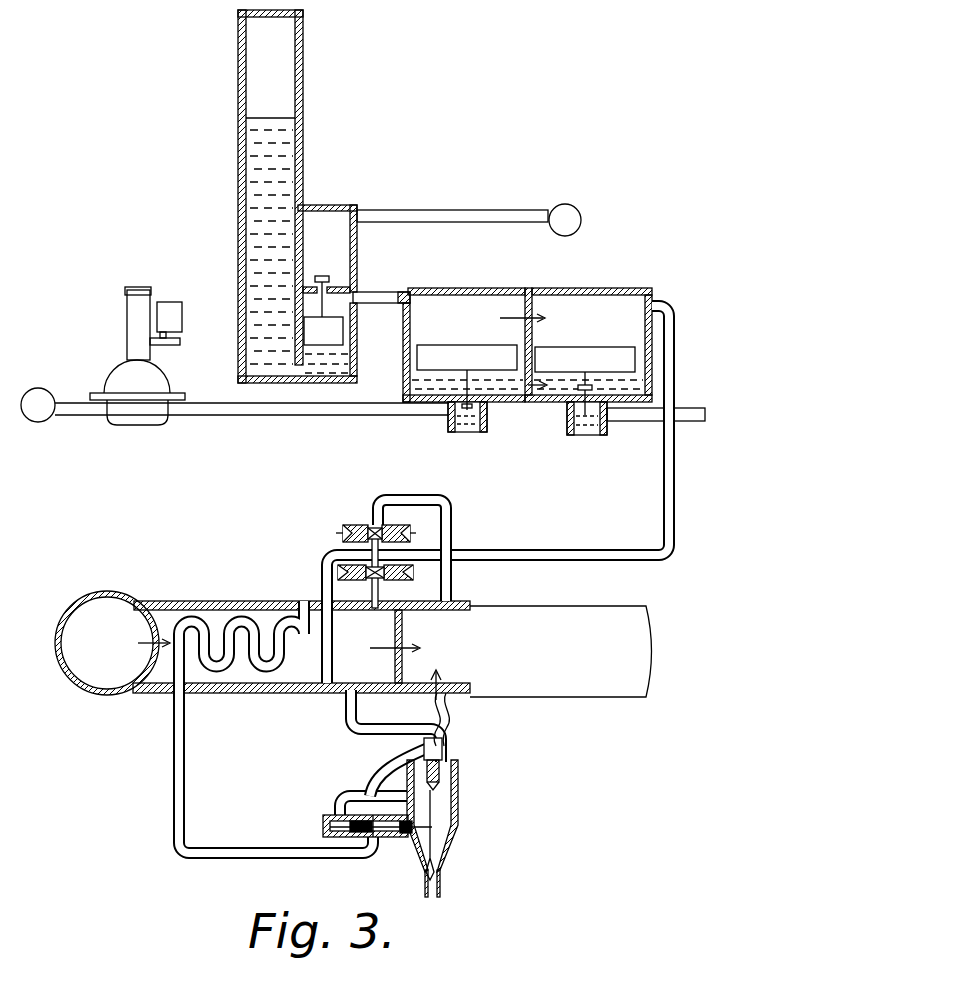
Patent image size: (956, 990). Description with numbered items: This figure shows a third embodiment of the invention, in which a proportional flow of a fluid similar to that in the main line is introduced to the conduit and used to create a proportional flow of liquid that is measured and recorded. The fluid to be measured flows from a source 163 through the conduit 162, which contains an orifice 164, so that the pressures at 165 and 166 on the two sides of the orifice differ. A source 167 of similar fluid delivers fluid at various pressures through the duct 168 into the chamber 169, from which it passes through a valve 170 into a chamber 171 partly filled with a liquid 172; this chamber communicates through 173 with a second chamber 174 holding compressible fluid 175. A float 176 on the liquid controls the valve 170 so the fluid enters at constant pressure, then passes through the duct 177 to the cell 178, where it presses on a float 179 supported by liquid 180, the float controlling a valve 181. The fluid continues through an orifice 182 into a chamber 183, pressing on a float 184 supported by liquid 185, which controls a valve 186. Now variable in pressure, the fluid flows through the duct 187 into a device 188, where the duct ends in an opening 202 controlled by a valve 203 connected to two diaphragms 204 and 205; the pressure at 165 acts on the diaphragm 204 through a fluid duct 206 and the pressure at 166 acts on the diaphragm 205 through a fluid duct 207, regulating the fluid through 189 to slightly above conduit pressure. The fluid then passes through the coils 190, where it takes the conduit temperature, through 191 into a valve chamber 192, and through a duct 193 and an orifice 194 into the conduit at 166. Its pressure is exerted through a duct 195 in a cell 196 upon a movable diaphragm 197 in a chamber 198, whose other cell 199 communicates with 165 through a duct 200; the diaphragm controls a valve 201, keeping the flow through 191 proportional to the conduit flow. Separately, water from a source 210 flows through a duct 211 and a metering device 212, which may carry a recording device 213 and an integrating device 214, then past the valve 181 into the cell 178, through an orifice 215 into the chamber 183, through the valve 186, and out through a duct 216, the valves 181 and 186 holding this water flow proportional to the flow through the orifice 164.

The conduit 162 is at (587, 682).
The source 163 is at (88, 692).
The orifice 164 is at (403, 636).
The pressure point 165 is at (301, 647).
The pressure point 166 is at (408, 670).
The source of fluid 167 is at (581, 220).
The duct 168 is at (447, 217).
The chamber 169 is at (346, 243).
The valve 170 is at (355, 290).
The chamber 171 is at (347, 313).
The liquid 172 is at (340, 356).
The communication passage 173 is at (298, 381).
The second chamber 174 is at (243, 225).
The compressible fluid 175 is at (289, 93).
The float 176 is at (325, 310).
The duct 177 is at (392, 297).
The cell 178 is at (507, 273).
The float 179 is at (467, 373).
The liquid 180 is at (408, 391).
The valve 181 is at (452, 426).
The orifice 182 is at (545, 300).
The chamber 183 is at (622, 288).
The float 184 is at (585, 374).
The liquid 185 is at (652, 379).
The valve 186 is at (572, 415).
The duct 187 is at (664, 489).
The device 188 is at (345, 538).
The passage 189 is at (340, 573).
The coils 190 is at (220, 674).
The duct 191 is at (258, 850).
The valve chamber 192 is at (404, 840).
The duct 193 is at (367, 769).
The orifice 194 is at (447, 705).
The duct 195 is at (442, 750).
The cell 196 is at (420, 790).
The movable diaphragm 197 is at (438, 817).
The chamber 198 is at (440, 864).
The cell 199 is at (443, 803).
The duct 200 is at (350, 713).
The valve 201 is at (323, 826).
The opening 202 is at (418, 545).
The valve 203 is at (357, 527).
The diaphragm 204 is at (322, 588).
The diaphragm 205 is at (388, 522).
The fluid duct 206 is at (380, 594).
The fluid duct 207 is at (452, 541).
The source of liquid 210 is at (44, 419).
The duct 211 is at (98, 416).
The metering device 212 is at (157, 415).
The recording device 213 is at (172, 303).
The integrating device 214 is at (127, 291).
The orifice 215 is at (533, 400).
The duct 216 is at (640, 421).